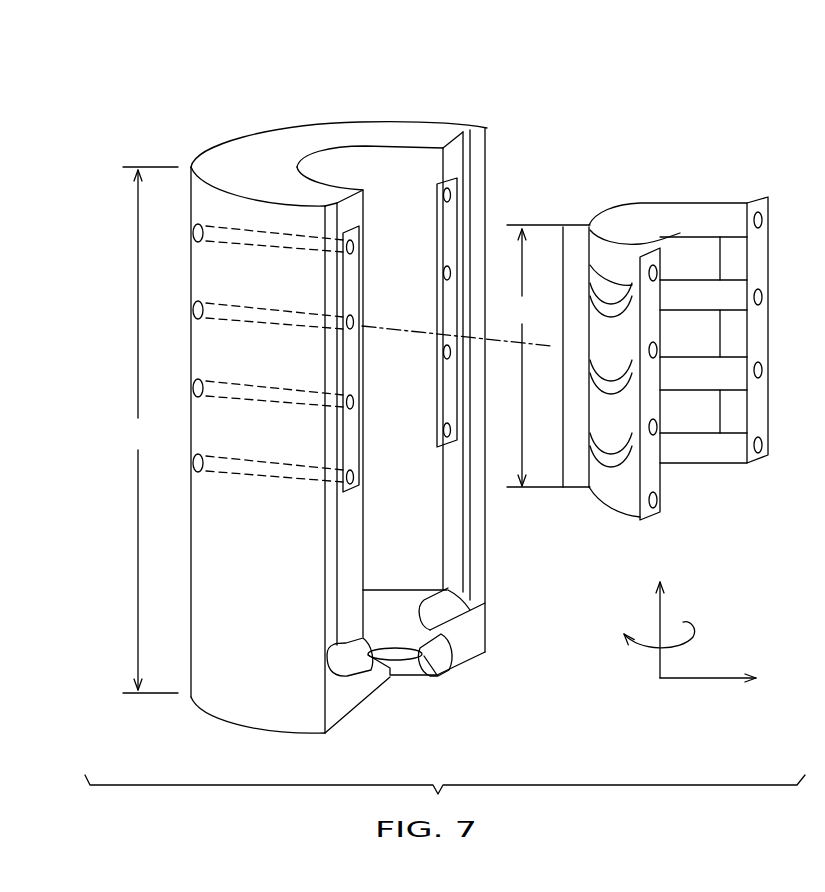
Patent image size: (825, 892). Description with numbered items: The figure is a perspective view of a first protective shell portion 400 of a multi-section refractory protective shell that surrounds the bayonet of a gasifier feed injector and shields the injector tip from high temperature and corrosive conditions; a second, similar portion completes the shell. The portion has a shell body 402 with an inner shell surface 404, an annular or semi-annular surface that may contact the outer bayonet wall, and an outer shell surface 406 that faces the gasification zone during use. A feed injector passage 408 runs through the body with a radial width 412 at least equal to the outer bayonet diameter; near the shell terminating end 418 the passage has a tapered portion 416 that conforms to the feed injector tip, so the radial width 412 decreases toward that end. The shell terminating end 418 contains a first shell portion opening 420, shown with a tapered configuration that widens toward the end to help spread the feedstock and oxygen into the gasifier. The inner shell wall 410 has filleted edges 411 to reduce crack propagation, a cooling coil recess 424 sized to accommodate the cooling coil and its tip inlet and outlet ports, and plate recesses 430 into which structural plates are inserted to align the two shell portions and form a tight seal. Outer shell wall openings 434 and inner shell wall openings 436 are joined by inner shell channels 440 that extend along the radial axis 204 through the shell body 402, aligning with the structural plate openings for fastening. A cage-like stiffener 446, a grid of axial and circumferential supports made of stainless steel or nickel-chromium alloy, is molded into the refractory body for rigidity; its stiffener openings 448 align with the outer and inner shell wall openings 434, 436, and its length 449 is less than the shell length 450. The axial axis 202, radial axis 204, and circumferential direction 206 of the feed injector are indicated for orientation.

The first protective shell portion 400 is at (138, 100).
The shell body 402 is at (180, 158).
The inner shell surface 404 is at (367, 164).
The outer shell surface 406 is at (190, 603).
The feed injector passage 408 is at (338, 170).
The inner shell wall 410 is at (347, 703).
The filleted edges 411 is at (487, 128).
The radial width 412 is at (440, 168).
The tapered portion 416 is at (414, 638).
The shell terminating end 418 is at (443, 675).
The first shell portion opening 420 is at (403, 693).
The cooling coil recess 424 is at (465, 596).
The plate recess 430 is at (350, 273).
The outer shell wall openings 434 is at (192, 314).
The inner shell wall openings 436 is at (443, 198).
The inner shell channel 440 is at (232, 480).
The stiffener 446 is at (745, 190).
The stiffener openings 448 is at (763, 222).
The length 449 is at (547, 356).
The shell length 450 is at (148, 431).
The axial axis 202 is at (662, 615).
The radial axis 204 is at (712, 680).
The circumferential direction 206 is at (650, 645).